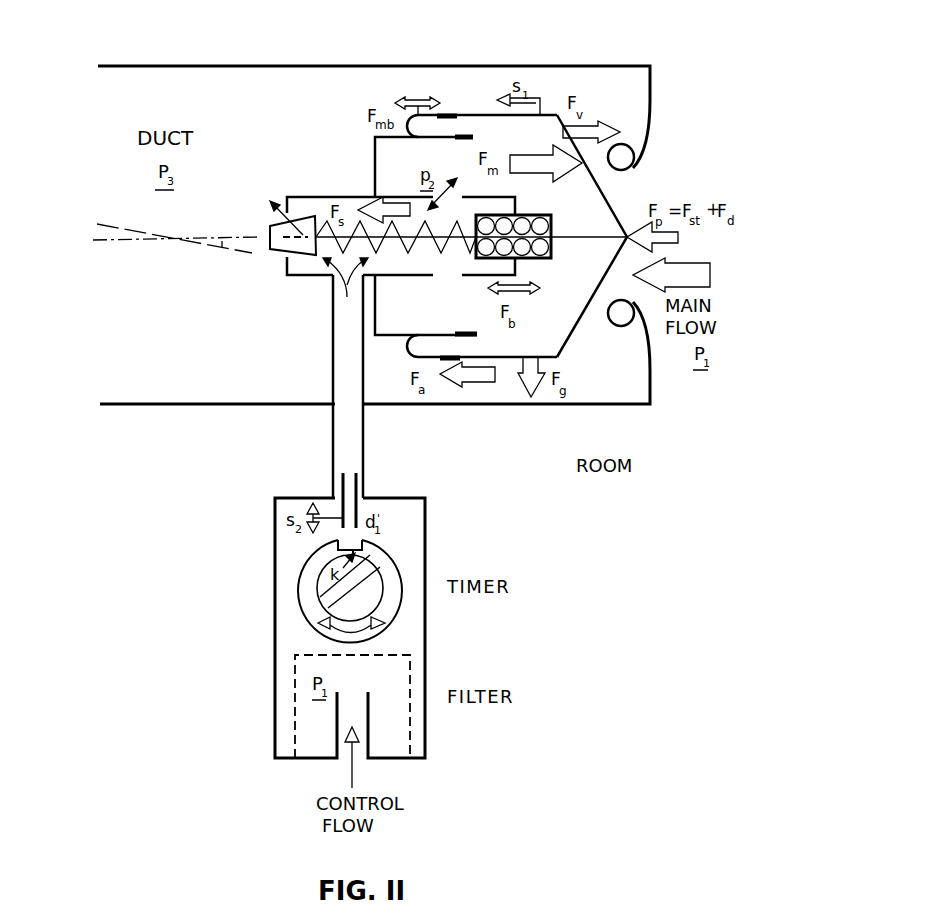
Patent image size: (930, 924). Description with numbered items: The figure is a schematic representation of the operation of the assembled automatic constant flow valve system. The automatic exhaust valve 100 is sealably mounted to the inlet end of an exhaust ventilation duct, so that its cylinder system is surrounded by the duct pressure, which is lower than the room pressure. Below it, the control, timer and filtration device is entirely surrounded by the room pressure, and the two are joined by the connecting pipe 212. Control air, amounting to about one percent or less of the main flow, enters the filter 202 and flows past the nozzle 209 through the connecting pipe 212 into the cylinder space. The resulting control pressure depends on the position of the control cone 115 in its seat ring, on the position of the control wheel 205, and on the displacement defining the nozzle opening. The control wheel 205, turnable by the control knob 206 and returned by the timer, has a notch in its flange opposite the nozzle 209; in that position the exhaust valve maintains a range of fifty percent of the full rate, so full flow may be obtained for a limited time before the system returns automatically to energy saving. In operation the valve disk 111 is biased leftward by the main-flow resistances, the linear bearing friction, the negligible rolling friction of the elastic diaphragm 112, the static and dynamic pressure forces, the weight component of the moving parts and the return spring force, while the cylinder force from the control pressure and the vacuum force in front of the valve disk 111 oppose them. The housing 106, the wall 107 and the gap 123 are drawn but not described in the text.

The automatic exhaust valve 100 is at (552, 60).
The housing 106 is at (323, 197).
The upper wall with flexible seal 107 is at (374, 162).
The valve disk 111 is at (612, 214).
The elastic diaphragm 112 is at (414, 352).
The control cone 115 is at (280, 225).
The lower gap 123 is at (447, 280).
The filter 202 is at (295, 702).
The control wheel 205 is at (306, 604).
The control knob 206 is at (362, 570).
The nozzle 209 is at (358, 490).
The connecting pipe 212 is at (332, 446).